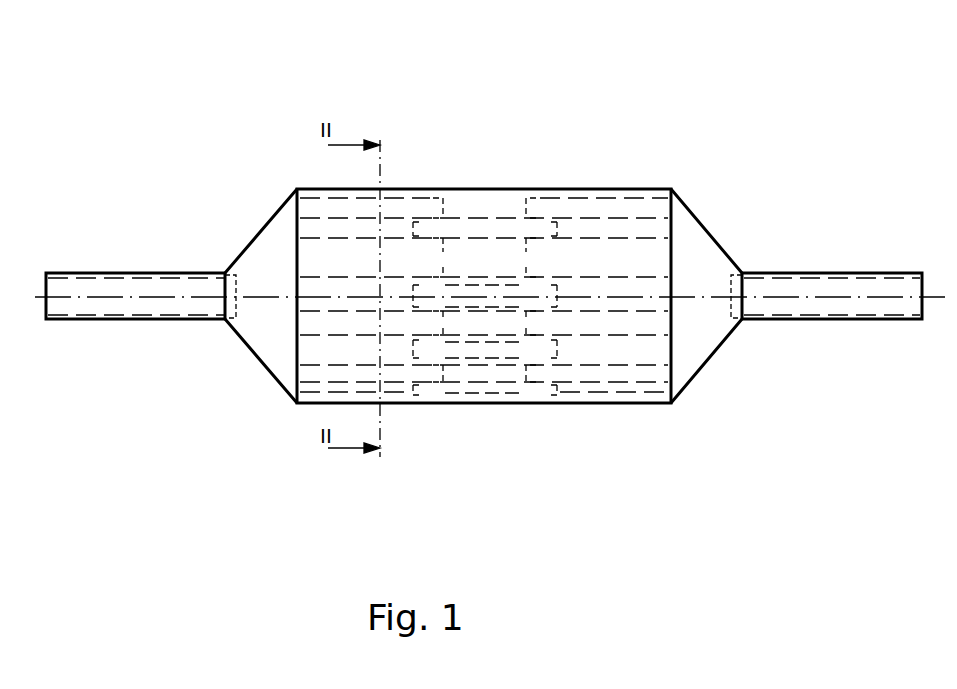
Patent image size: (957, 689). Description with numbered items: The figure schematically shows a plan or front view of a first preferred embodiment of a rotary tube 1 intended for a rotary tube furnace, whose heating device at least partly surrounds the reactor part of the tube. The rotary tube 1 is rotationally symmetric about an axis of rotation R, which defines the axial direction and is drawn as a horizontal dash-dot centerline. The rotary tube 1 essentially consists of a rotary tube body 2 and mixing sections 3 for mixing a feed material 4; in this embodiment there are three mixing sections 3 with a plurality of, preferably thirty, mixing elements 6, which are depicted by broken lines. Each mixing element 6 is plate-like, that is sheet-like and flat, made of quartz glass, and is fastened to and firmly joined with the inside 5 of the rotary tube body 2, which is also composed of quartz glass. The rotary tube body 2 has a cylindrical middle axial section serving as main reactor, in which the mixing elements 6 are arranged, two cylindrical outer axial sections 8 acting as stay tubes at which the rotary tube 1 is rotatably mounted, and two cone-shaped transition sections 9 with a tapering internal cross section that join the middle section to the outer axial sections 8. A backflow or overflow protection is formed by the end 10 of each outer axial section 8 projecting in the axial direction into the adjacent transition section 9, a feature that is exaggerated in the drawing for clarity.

The rotary tube 1 is at (236, 113).
The rotary tube body 2 is at (765, 273).
The mixing section 3 is at (406, 411).
The feed material 4 is at (582, 406).
The inside 5 is at (577, 196).
The mixing element 6 is at (423, 248).
The outer axial section 8 is at (126, 320).
The transition section 9 is at (250, 248).
The end 10 is at (233, 320).
The axis of rotation R is at (930, 298).